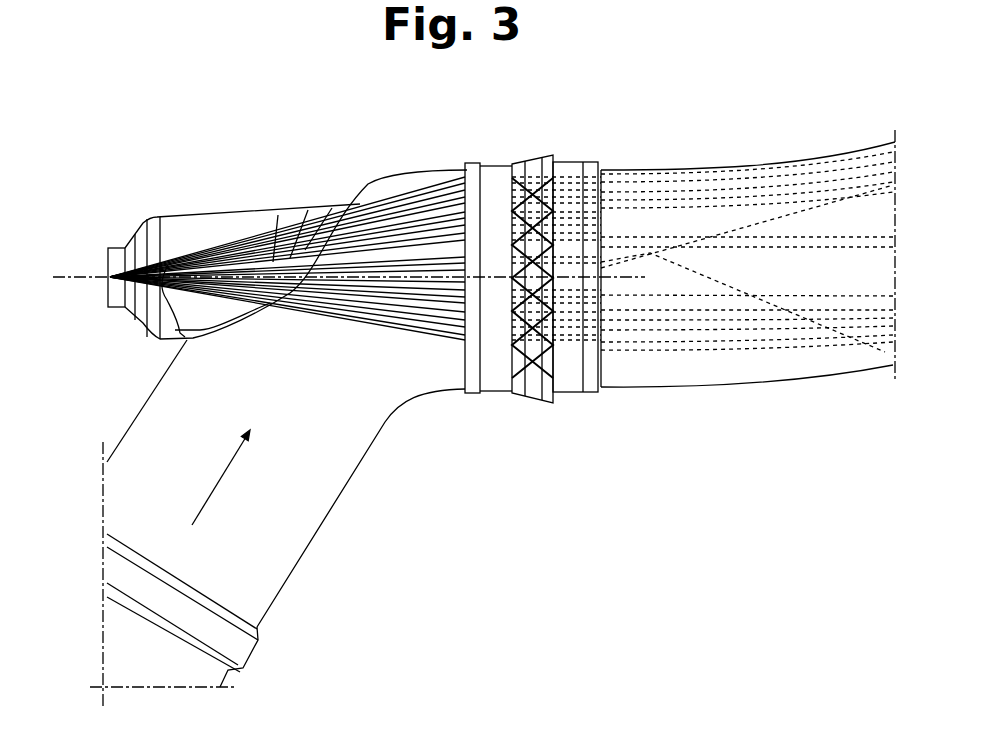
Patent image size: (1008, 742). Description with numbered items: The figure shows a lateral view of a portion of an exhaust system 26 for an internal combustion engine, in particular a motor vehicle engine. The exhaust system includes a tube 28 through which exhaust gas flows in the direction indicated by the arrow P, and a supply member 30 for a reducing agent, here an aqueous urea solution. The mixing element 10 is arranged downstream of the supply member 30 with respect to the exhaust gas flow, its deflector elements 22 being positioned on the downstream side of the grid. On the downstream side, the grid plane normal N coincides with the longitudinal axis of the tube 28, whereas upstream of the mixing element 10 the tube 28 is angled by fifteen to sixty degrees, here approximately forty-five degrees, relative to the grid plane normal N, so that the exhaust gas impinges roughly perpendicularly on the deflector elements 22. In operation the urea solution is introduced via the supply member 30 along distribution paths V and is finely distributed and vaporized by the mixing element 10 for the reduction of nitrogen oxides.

The mixing element 10 is at (496, 402).
The deflector elements 22 is at (543, 403).
The exhaust system 26 is at (676, 132).
The tube 28 is at (257, 557).
The supply member 30 is at (210, 232).
The distribution paths V is at (337, 240).
The grid plane normal N is at (632, 278).
The arrow indicating flow direction P is at (206, 500).